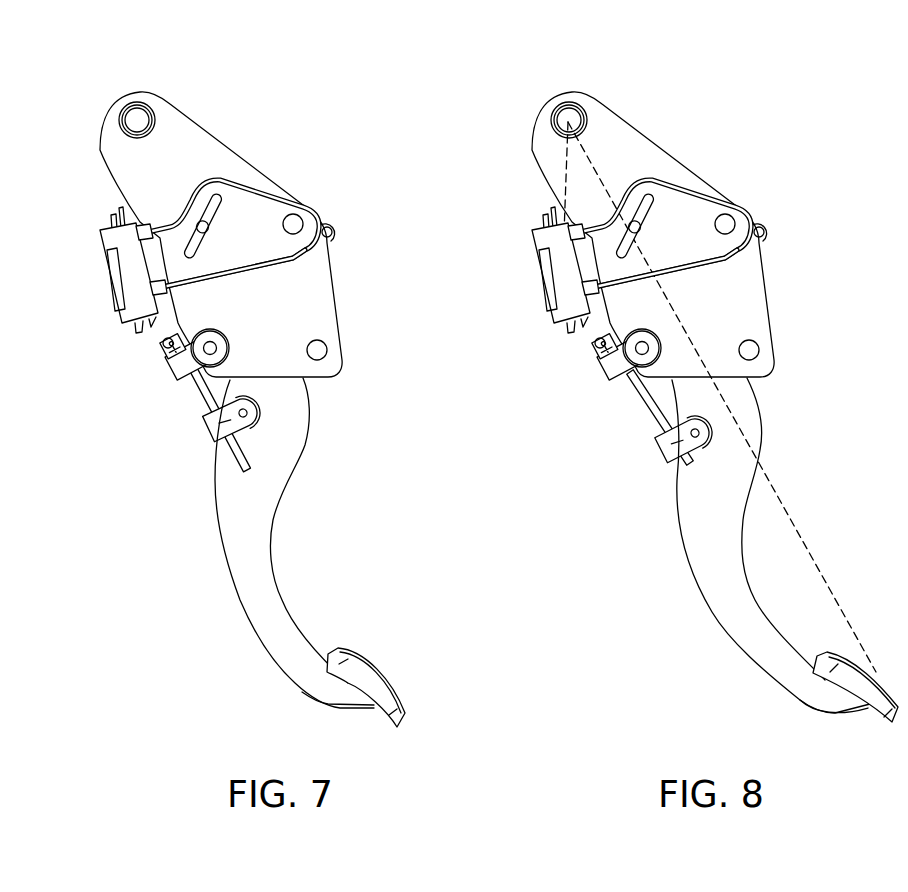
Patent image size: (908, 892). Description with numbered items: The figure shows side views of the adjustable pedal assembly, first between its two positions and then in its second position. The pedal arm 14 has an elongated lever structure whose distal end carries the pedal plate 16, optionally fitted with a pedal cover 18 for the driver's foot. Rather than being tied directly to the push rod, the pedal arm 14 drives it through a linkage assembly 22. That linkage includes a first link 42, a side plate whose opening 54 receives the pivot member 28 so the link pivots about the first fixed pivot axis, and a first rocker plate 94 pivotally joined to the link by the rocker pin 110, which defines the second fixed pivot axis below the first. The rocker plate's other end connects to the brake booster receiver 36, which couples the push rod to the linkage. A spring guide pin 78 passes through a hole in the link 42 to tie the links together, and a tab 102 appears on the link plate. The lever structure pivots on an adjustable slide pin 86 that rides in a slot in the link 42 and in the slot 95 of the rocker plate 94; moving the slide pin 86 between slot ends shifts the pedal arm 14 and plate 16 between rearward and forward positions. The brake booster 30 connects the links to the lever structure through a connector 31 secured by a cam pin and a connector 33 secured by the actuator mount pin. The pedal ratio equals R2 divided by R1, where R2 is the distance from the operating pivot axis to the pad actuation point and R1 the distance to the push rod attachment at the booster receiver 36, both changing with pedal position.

In FIG. 7, the pedal arm 14 is at (275, 655).
In FIG. 8, the pedal arm 14 is at (771, 545).
In FIG. 7, the pedal plate 16 is at (380, 717).
In FIG. 8, the pedal plate 16 is at (862, 716).
In FIG. 7, the pedal cover 18 is at (372, 663).
In FIG. 8, the pedal cover 18 is at (860, 670).
In FIG. 7, the linkage assembly 22 is at (248, 230).
In FIG. 8, the linkage assembly 22 is at (681, 230).
In FIG. 7, the pivot member 28 is at (137, 102).
In FIG. 8, the pivot member 28 is at (566, 90).
In FIG. 7, the brake booster 30 is at (203, 411).
In FIG. 8, the brake booster 30 is at (625, 417).
In FIG. 7, the connector 31 is at (220, 352).
In FIG. 8, the connector 31 is at (663, 346).
In FIG. 7, the connector 33 is at (215, 423).
In FIG. 8, the connector 33 is at (664, 448).
In FIG. 7, the brake booster receiver 36 is at (103, 290).
In FIG. 8, the brake booster receiver 36 is at (538, 270).
In FIG. 7, the first link 42 is at (323, 317).
In FIG. 8, the first link 42 is at (681, 234).
In FIG. 7, the opening 54 is at (155, 127).
In FIG. 8, the opening 54 is at (602, 105).
In FIG. 7, the spring guide pin 78 is at (317, 353).
In FIG. 8, the spring guide pin 78 is at (765, 377).
In FIG. 7, the adjustable slide pin 86 is at (203, 222).
In FIG. 8, the adjustable slide pin 86 is at (622, 234).
In FIG. 7, the first rocker plate 94 is at (240, 272).
In FIG. 8, the first rocker plate 94 is at (663, 285).
In FIG. 7, the slot 95 is at (213, 207).
In FIG. 8, the slot 95 is at (650, 226).
In FIG. 7, the tab 102 is at (310, 233).
In FIG. 8, the tab 102 is at (778, 259).
In FIG. 7, the rocker pin 110 is at (300, 220).
In FIG. 8, the rocker pin 110 is at (756, 208).
In FIG. 8, the distance between operating pivot axis and push rod attachment point R1 is at (530, 206).
In FIG. 8, the distance between operating pivot axis and pedal pad actuation point R2 is at (722, 397).